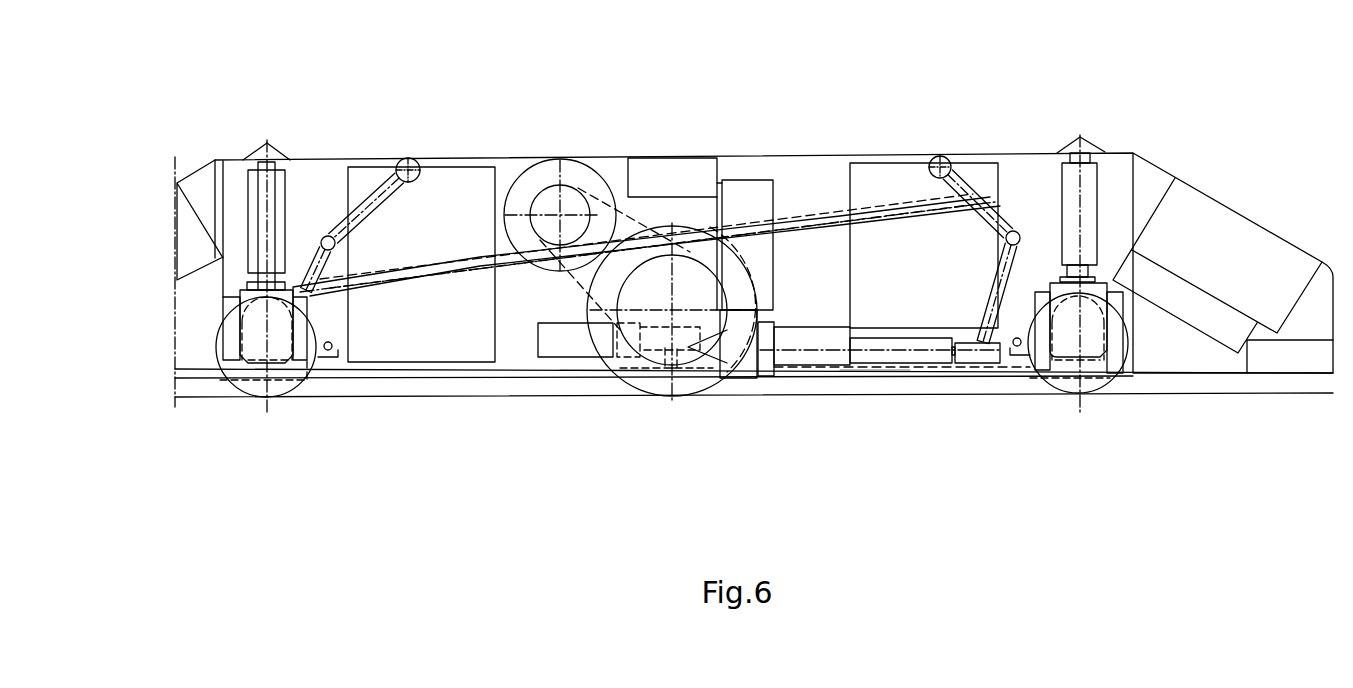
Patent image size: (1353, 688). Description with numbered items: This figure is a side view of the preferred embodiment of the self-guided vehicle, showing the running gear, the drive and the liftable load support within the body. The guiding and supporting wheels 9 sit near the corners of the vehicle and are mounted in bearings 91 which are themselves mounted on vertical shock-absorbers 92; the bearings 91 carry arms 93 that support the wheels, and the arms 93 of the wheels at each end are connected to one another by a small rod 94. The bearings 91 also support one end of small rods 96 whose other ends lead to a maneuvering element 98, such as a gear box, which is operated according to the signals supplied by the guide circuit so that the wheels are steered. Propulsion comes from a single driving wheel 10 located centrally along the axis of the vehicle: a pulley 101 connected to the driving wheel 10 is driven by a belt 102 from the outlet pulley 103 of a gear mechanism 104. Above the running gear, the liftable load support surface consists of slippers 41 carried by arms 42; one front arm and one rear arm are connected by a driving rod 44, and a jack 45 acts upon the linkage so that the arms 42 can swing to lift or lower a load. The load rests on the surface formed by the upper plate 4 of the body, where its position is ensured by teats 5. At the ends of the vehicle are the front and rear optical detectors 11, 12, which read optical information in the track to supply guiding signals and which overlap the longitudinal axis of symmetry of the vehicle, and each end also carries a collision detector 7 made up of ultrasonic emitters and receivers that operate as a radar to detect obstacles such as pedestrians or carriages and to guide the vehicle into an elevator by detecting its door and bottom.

The plate 4 is at (322, 158).
The teats 5 is at (273, 157).
The collision detector 7 is at (1262, 357).
The guiding and supporting wheels 9 is at (233, 370).
The driving wheel 10 is at (667, 383).
The optical detector 11 is at (198, 170).
The optical detector 12 is at (1044, 290).
The slippers 41 is at (408, 158).
The arms 42 is at (378, 195).
The driving rod 44 is at (820, 222).
The jack 45 is at (802, 352).
The bearings 91 is at (1103, 283).
The vertical shock-absorbers 92 is at (1060, 280).
The arms 93 is at (318, 367).
The small rod 94 is at (340, 357).
The small rods 96 is at (602, 372).
The maneuvering element 98 is at (557, 342).
The pulley 101 is at (655, 268).
The belt 102 is at (623, 217).
The outlet pulley 103 is at (562, 197).
The gear mechanism 104 is at (527, 187).